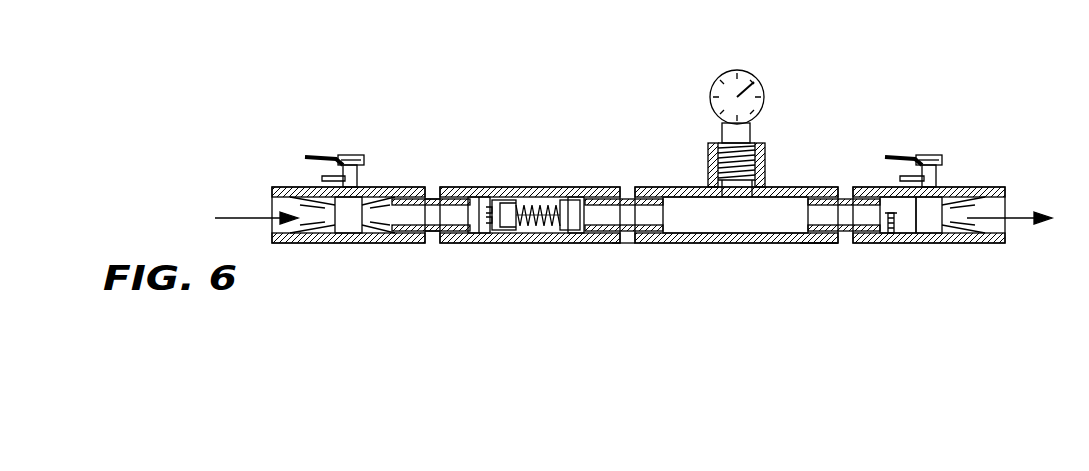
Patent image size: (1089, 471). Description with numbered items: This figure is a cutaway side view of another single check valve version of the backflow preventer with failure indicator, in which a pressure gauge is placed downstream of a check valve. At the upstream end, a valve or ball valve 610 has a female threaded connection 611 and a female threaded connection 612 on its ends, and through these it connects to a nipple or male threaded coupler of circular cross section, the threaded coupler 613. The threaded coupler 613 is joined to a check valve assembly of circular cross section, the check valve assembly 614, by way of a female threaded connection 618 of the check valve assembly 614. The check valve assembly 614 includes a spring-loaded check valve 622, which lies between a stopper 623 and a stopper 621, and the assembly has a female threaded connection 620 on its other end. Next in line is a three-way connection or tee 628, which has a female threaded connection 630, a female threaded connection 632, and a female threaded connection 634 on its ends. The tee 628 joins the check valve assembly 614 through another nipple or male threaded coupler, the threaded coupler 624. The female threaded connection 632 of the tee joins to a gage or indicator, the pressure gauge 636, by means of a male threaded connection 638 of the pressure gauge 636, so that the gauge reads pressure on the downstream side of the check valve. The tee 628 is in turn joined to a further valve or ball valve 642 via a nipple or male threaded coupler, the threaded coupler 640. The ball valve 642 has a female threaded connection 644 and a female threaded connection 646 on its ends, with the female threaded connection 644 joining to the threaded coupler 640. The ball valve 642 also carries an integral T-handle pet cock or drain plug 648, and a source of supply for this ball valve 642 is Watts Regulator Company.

The ball valve 610 is at (324, 220).
The female threaded connection 611 is at (287, 187).
The female threaded connection 612 is at (412, 187).
The threaded coupler 613 is at (432, 243).
The check valve assembly 614 is at (521, 200).
The female threaded connection 618 is at (445, 187).
The female threaded connection 620 is at (605, 187).
The stopper 621 is at (568, 187).
The spring-loaded check valve 622 is at (514, 252).
The stopper 623 is at (482, 187).
The threaded coupler 624 is at (620, 243).
The tee 628 is at (749, 176).
The female threaded connection 630 is at (650, 187).
The female threaded connection 632 is at (786, 120).
The female threaded connection 634 is at (818, 246).
The pressure gauge 636 is at (735, 62).
The male threaded connection 638 is at (752, 136).
The threaded coupler 640 is at (845, 243).
The ball valve 642 is at (952, 219).
The female threaded connection 644 is at (857, 187).
The female threaded connection 646 is at (990, 187).
The drain plug 648 is at (890, 243).